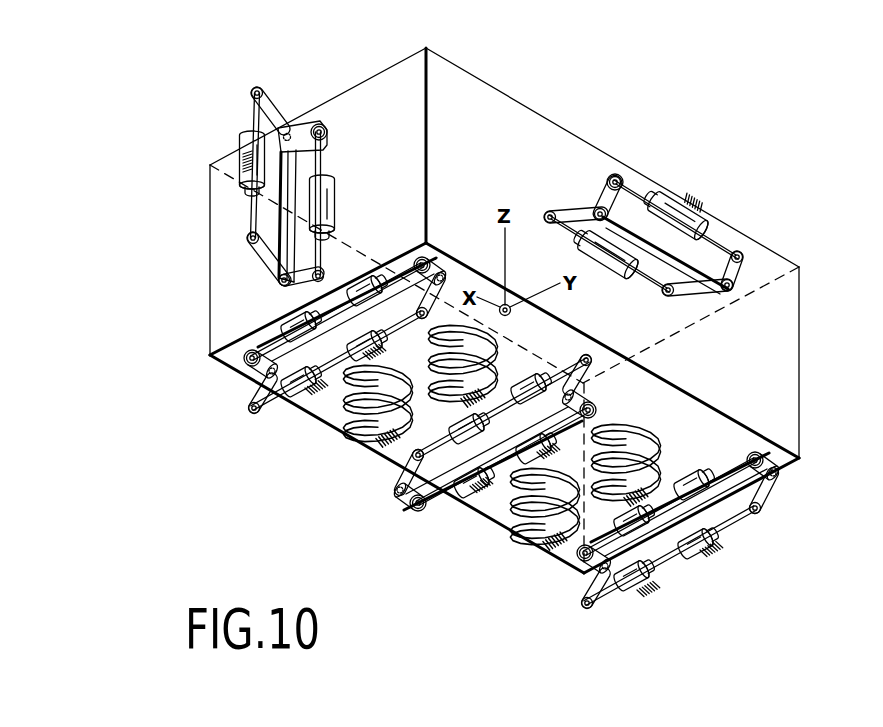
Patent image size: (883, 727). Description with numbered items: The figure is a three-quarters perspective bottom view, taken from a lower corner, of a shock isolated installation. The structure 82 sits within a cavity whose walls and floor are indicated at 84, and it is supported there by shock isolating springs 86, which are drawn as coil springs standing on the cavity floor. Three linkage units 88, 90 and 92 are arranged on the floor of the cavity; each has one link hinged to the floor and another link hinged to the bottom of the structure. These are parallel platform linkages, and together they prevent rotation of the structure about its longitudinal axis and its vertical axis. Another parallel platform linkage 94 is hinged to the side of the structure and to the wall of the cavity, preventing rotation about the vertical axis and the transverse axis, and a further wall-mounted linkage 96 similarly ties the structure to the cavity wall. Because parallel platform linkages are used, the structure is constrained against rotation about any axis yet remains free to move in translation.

The structure 82 is at (530, 104).
The cavity walls and floor 84 is at (242, 138).
The shock isolating springs 86 is at (503, 518).
The linkage unit 88 is at (787, 504).
The linkage unit 90 is at (369, 501).
The linkage unit 92 is at (229, 397).
The parallel platform linkage 94 is at (762, 264).
The left wall linkage assembly 96 is at (230, 255).